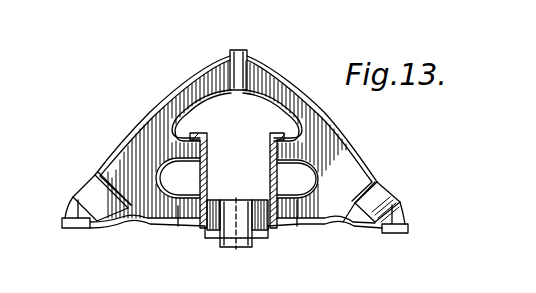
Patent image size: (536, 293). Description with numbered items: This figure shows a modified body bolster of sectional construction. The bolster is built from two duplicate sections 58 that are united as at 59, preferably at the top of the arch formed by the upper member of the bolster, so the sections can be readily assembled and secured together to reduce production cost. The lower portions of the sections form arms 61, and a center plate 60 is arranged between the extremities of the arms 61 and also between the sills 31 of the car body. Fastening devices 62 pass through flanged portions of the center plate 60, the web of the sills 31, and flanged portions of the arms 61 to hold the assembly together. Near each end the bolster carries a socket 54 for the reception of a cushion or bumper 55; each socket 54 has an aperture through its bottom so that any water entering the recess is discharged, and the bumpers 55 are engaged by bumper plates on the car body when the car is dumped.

The sills 31 is at (270, 170).
The sockets 54 is at (95, 176).
The bumpers 55 is at (80, 185).
The sections 58 is at (160, 115).
The joint at top of arch 59 is at (237, 50).
The center plate 60 is at (253, 244).
The arms 61 is at (193, 215).
The fastening devices 62 is at (264, 206).